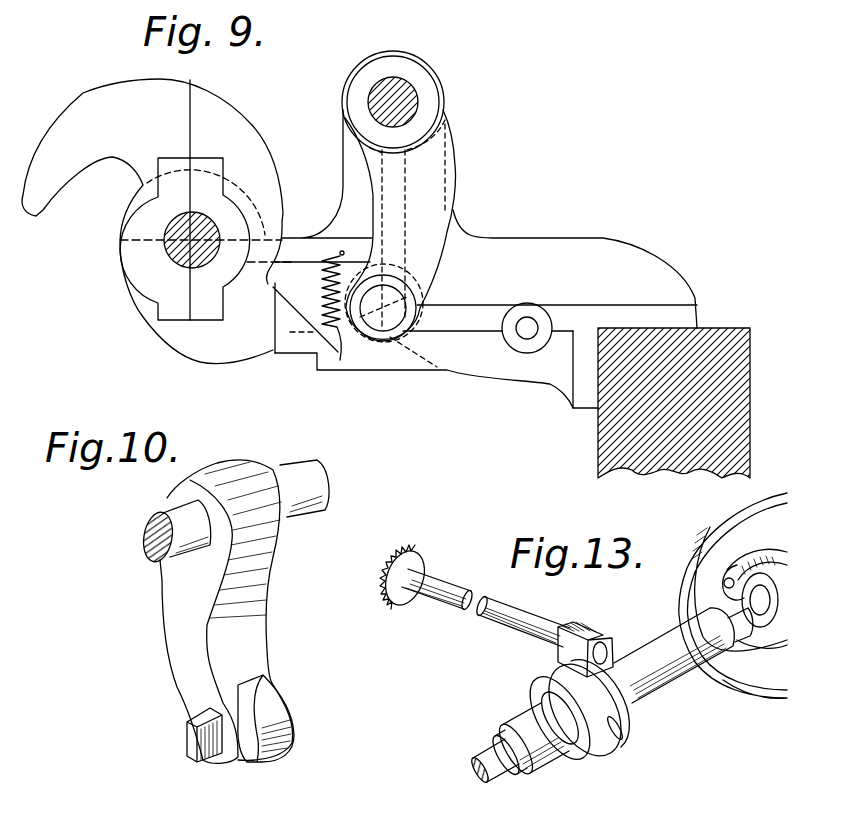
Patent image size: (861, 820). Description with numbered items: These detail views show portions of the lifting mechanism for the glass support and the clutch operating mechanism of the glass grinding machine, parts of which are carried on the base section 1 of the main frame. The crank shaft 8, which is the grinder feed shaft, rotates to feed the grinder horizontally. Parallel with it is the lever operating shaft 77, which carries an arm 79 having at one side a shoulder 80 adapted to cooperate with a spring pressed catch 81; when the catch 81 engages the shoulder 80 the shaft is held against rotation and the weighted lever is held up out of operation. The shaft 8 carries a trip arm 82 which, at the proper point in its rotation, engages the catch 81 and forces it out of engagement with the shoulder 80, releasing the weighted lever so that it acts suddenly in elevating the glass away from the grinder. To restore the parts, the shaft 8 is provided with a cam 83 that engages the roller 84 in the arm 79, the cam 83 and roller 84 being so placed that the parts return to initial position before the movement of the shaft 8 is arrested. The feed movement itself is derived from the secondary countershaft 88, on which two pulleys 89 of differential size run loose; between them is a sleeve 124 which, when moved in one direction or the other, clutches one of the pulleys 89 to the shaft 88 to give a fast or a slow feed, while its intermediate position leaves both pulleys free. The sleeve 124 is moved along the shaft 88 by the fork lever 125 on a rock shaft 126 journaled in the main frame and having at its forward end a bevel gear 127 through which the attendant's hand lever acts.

In FIG. 9, the base section 1 is at (618, 433).
In FIG. 9, the crank shaft 8 is at (170, 250).
In FIG. 9, the lever operating shaft 77 is at (412, 88).
In FIG. 9, the arm 79 is at (432, 193).
In FIG. 10, the arm 79 is at (173, 610).
In FIG. 9, the shoulder 80 is at (407, 273).
In FIG. 10, the shoulder 80 is at (190, 752).
In FIG. 9, the catch 81 is at (387, 360).
In FIG. 9, the trip arm 82 is at (290, 347).
In FIG. 9, the cam 83 is at (152, 221).
In FIG. 9, the roller 84 is at (417, 320).
In FIG. 10, the roller 84 is at (267, 705).
In FIG. 13, the secondary countershaft 88 is at (487, 757).
In FIG. 13, the pulleys 89 is at (755, 673).
In FIG. 13, the sleeve 124 is at (662, 640).
In FIG. 13, the fork lever 125 is at (617, 697).
In FIG. 13, the rock shaft 126 is at (523, 613).
In FIG. 13, the bevel gear 127 is at (400, 548).